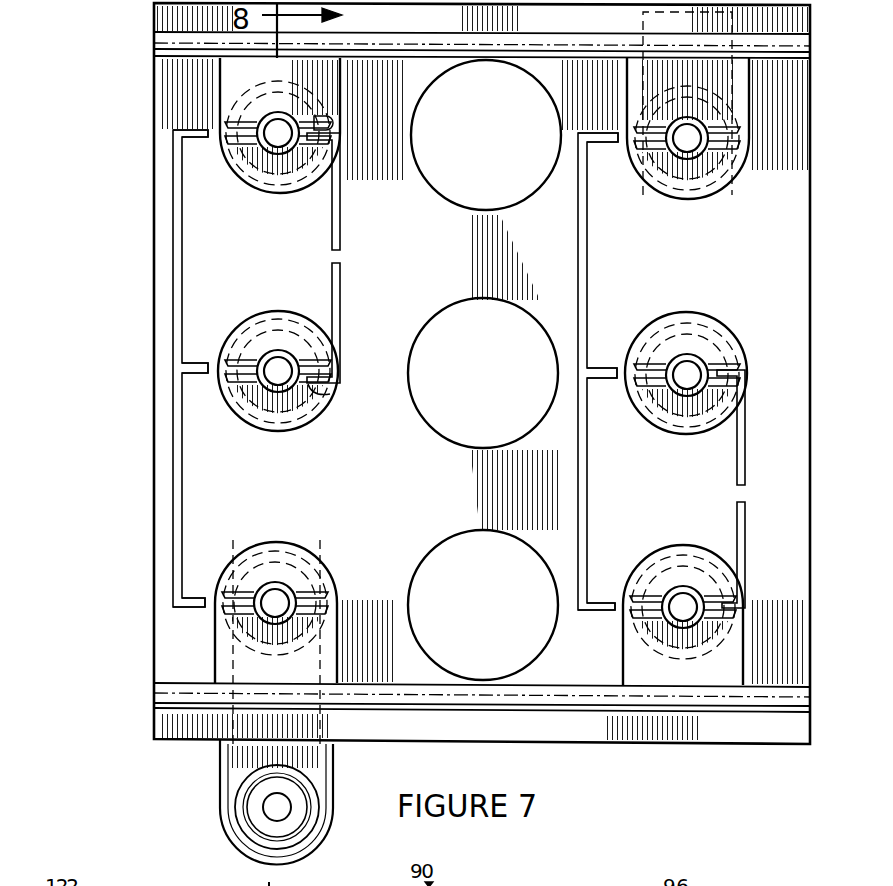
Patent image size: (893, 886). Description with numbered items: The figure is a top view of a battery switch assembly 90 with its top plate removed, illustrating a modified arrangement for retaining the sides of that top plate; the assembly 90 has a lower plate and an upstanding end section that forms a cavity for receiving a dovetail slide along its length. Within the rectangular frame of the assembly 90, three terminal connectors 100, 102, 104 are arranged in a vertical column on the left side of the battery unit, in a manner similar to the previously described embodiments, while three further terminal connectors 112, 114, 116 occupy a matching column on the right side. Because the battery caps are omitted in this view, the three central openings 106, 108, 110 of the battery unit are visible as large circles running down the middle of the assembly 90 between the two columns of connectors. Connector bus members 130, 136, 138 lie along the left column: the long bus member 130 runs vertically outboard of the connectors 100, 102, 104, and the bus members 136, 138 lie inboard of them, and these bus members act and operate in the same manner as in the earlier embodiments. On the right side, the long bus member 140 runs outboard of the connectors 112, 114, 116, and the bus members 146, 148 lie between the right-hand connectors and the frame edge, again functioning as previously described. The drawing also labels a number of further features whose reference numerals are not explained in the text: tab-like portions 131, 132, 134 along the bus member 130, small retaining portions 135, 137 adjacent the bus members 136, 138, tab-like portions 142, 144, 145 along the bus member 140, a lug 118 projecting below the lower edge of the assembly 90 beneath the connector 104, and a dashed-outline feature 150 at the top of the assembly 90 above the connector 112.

The assembly 90 is at (128, 72).
The terminal connector 100 is at (283, 153).
The terminal connector 102 is at (276, 350).
The terminal connector 104 is at (276, 582).
The central opening 106 is at (472, 203).
The central opening 108 is at (463, 437).
The central opening 110 is at (461, 546).
The terminal connector 112 is at (693, 160).
The terminal connector 114 is at (686, 354).
The terminal connector 116 is at (678, 588).
The mounting lug 118 is at (220, 807).
The connector bus member 130 is at (172, 245).
The upper tab of left clip 131 is at (193, 129).
The middle tab of left clip 132 is at (195, 375).
The lower tab of left clip 134 is at (192, 608).
The retaining hook 135 is at (333, 119).
The connector bus member 136 is at (340, 186).
The retaining hook 137 is at (322, 386).
The connector bus member 138 is at (340, 296).
The connector bus member 140 is at (578, 262).
The upper tab of right clip 142 is at (598, 133).
The middle tab of right clip 144 is at (606, 380).
The lower tab of right clip 145 is at (600, 603).
The connector bus member 146 is at (722, 392).
The connector bus member 148 is at (723, 596).
The hidden slot 150 is at (640, 15).